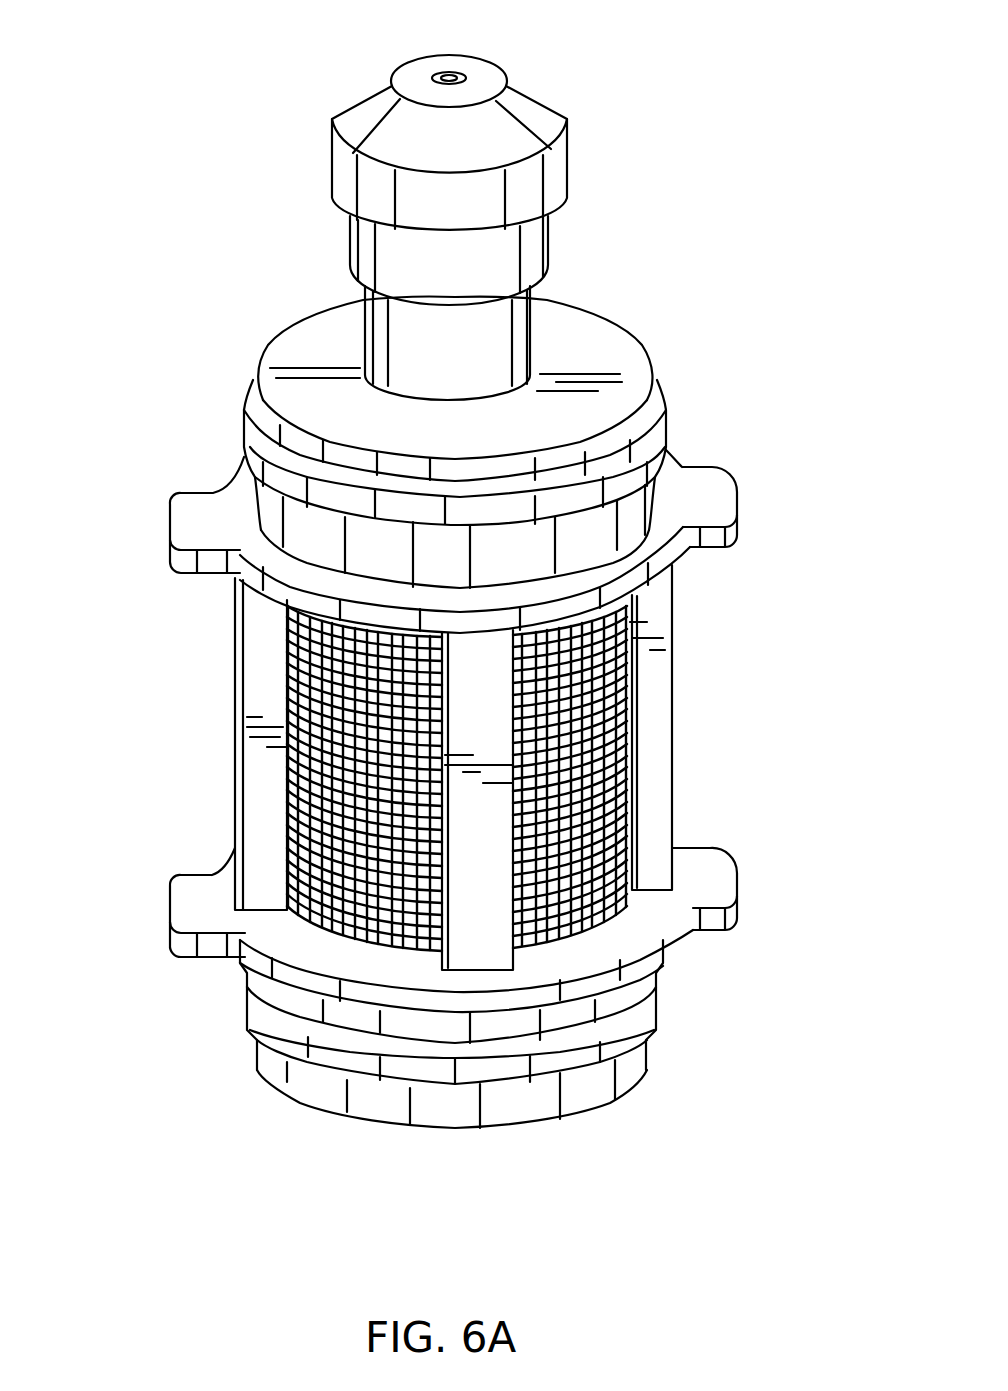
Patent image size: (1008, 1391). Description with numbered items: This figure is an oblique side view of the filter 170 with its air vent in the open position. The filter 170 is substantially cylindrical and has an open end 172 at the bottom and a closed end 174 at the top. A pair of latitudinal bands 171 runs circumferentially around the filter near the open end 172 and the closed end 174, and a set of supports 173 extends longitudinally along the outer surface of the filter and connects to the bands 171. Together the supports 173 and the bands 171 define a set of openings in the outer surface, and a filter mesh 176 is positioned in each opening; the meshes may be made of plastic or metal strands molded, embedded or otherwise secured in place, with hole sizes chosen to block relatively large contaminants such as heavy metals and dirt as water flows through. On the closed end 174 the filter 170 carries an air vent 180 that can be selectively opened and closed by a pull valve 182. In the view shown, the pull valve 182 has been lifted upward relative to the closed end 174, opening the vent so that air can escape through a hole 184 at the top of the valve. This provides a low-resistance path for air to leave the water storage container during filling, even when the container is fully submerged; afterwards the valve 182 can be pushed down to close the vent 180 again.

The filter 170 is at (210, 156).
The latitudinal bands 171 is at (650, 448).
The open end 172 is at (570, 1092).
The supports 173 is at (480, 683).
The closed end 174 is at (293, 402).
The filter mesh 176 is at (517, 865).
The air vent 180 is at (520, 330).
The pull valve 182 is at (568, 173).
The hole 184 is at (452, 73).